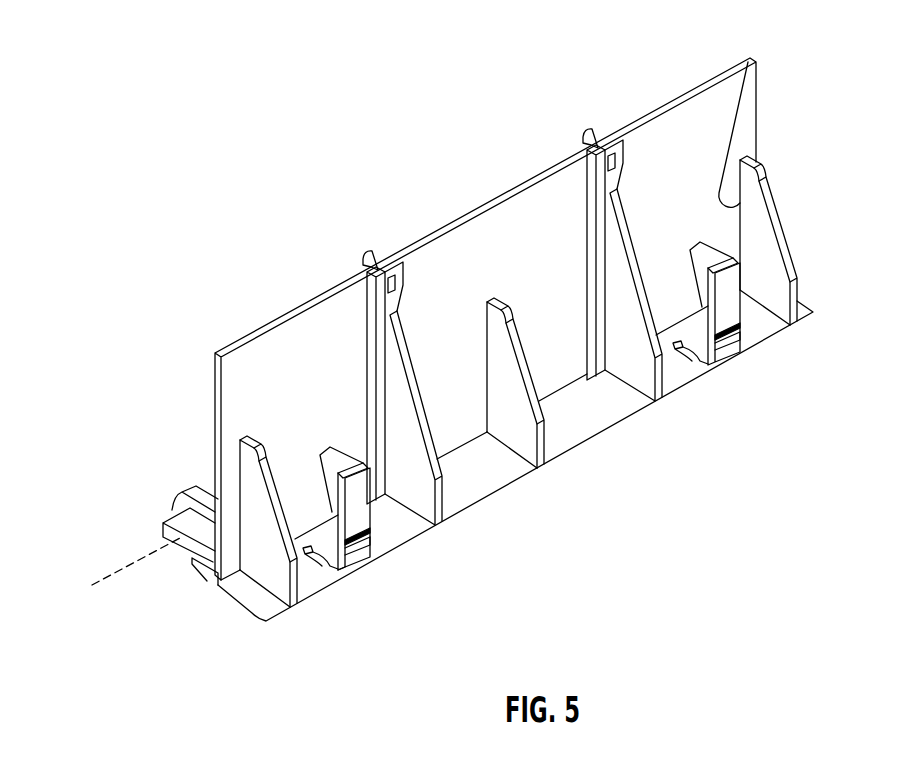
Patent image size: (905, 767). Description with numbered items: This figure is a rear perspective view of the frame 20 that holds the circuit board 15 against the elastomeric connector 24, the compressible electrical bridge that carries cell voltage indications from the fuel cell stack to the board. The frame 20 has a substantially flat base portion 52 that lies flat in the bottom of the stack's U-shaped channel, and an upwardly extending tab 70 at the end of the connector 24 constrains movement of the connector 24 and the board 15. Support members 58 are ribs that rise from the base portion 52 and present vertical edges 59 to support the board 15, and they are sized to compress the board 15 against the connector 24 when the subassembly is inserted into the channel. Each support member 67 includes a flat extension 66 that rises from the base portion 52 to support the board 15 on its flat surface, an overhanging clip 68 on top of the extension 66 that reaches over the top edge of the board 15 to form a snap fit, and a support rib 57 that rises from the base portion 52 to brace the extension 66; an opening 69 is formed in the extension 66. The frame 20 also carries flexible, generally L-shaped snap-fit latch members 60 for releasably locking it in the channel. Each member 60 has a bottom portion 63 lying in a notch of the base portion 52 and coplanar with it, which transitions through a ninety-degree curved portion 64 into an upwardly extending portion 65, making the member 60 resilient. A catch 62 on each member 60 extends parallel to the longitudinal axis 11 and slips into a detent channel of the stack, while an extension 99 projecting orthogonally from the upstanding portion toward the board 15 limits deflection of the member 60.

The longitudinal axis 11 is at (105, 578).
The circuit board 15 is at (770, 108).
The frame 20 is at (306, 549).
The elastomeric connector 24 is at (167, 532).
The base portion 52 is at (570, 420).
The support rib 57 is at (618, 282).
The support member 58 is at (752, 220).
The vertical edge 59 is at (748, 60).
The snap-fit latch member 60 is at (737, 292).
The catch 62 is at (735, 332).
The bottom portion 63 is at (682, 343).
The curved portion 64 is at (714, 353).
The upwardly extending portion 65 is at (742, 305).
The flat extension 66 is at (622, 158).
The support member 67 is at (587, 242).
The overhanging clip 68 is at (590, 132).
The post slot 69 is at (612, 155).
The upwardly extending tab 70 is at (197, 557).
The extension 99 is at (705, 243).